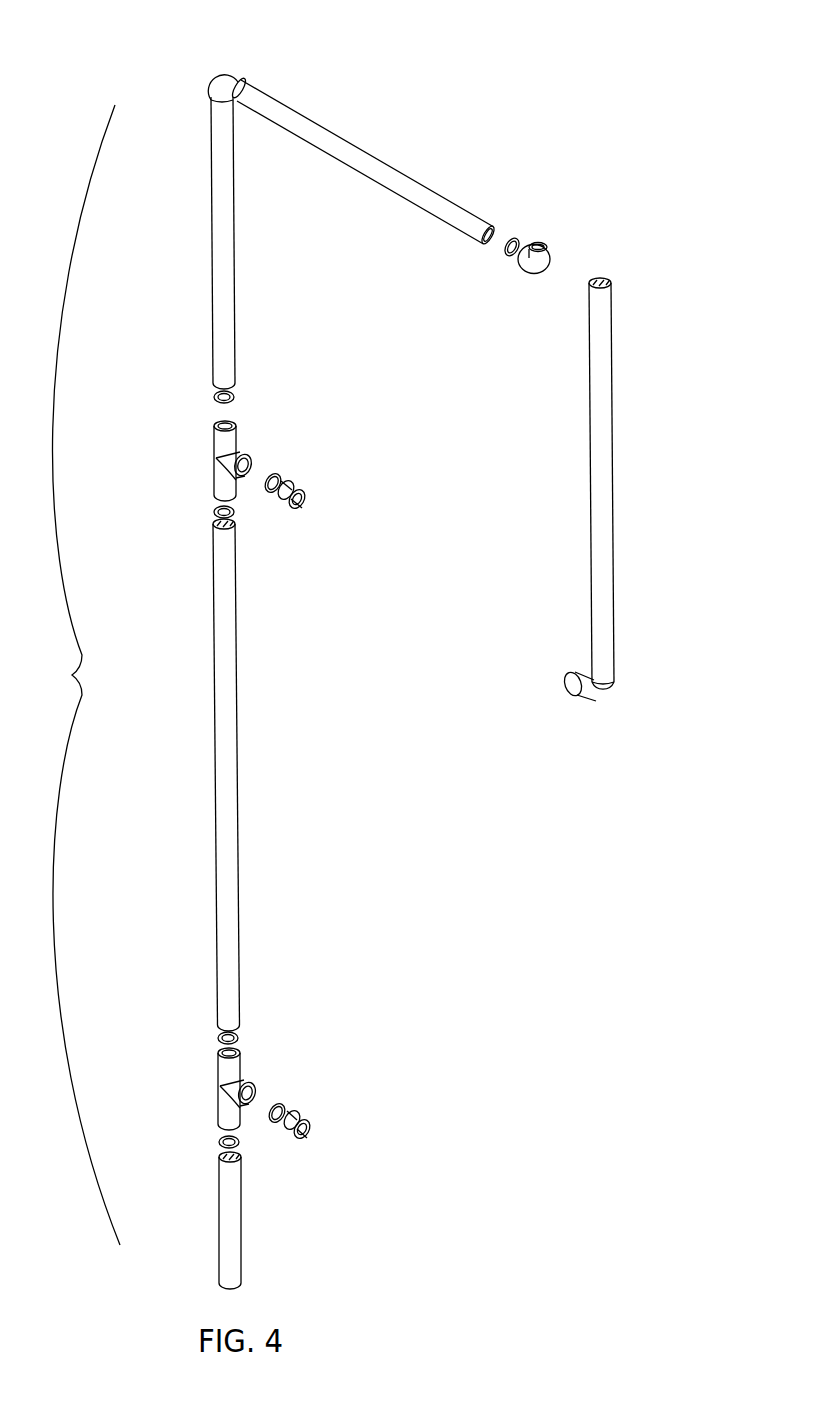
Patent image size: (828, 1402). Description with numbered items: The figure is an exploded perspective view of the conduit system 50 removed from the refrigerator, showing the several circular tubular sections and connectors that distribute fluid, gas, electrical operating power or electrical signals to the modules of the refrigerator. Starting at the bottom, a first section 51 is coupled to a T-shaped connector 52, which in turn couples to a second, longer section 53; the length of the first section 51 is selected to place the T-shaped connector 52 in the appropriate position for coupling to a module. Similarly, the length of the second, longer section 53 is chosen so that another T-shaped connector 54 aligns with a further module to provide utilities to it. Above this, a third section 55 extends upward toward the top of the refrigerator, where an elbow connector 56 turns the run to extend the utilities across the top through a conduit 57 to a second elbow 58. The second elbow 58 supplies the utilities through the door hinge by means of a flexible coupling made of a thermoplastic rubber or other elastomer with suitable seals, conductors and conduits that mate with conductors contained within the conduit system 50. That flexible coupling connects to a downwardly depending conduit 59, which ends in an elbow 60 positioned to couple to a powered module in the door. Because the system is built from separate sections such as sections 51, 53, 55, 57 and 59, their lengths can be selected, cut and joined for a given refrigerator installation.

The conduit system 50 is at (81, 675).
The first section 51 is at (224, 1222).
The T-shaped connector 52 is at (222, 1073).
The second, longer section 53 is at (220, 792).
The T-shaped connector 54 is at (218, 443).
The third section 55 is at (216, 262).
The elbow connector 56 is at (222, 90).
The conduit 57 is at (375, 165).
The second elbow 58 is at (543, 257).
The downwardly depending conduit 59 is at (605, 412).
The elbow 60 is at (602, 700).